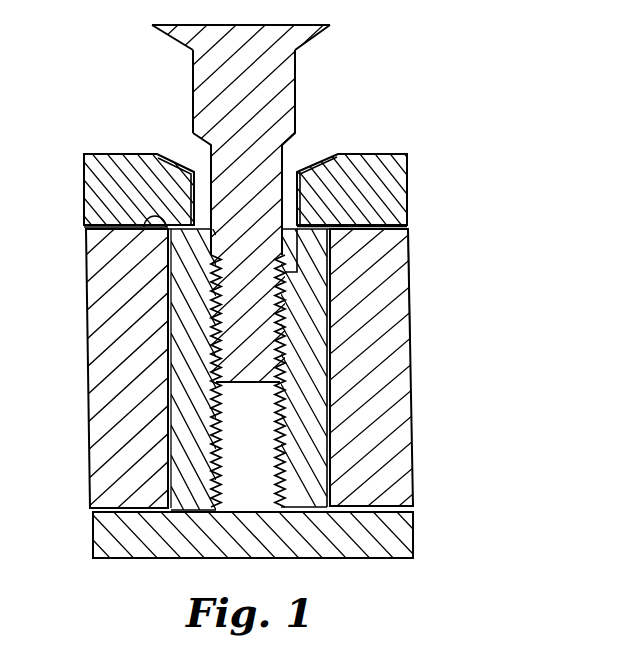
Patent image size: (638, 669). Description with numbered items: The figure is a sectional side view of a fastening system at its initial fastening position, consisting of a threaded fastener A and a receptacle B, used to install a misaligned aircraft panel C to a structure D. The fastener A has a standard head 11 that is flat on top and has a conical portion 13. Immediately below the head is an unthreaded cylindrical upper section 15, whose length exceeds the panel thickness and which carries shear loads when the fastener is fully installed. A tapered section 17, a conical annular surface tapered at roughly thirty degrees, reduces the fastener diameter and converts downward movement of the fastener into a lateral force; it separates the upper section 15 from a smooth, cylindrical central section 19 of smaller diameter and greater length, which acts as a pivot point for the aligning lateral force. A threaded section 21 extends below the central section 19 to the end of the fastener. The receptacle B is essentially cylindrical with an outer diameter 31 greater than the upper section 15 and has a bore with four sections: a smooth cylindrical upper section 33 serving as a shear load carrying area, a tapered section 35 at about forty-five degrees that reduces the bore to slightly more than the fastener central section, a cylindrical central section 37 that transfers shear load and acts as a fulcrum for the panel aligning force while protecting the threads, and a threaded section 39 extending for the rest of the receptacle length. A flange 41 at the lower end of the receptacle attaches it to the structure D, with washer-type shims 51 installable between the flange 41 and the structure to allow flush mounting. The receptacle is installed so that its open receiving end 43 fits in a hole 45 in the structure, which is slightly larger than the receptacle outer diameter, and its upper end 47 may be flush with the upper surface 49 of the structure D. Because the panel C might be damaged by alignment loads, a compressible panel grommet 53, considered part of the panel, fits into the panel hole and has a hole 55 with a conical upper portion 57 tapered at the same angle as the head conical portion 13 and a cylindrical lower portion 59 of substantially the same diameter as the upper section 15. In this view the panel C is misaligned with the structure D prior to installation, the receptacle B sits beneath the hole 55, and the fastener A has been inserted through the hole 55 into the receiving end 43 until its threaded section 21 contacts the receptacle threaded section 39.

The threaded fastener A is at (276, 268).
The head 11 is at (166, 36).
The conical portion 13 is at (191, 50).
The upper section 15 is at (192, 78).
The tapered section 17 is at (208, 143).
The central section 19 is at (119, 192).
The aircraft panel C is at (145, 193).
The threaded section 21 is at (153, 292).
The outer diameter 31 is at (409, 266).
The upper section 33 is at (330, 238).
The tapered section 35 is at (284, 328).
The central section 37 is at (288, 331).
The threaded section 39 is at (290, 381).
The flange 41 is at (412, 527).
The receiving end 43 is at (336, 227).
The hole 45 is at (410, 233).
The upper end 47 is at (100, 232).
The upper surface 49 is at (144, 234).
The washer-type shims 51 is at (97, 507).
The panel grommet 53 is at (391, 182).
The hole 55 is at (308, 157).
The conical upper portion 57 is at (320, 161).
The lower portion 59 is at (301, 180).
The receptacle B is at (394, 371).
The structure D is at (90, 371).